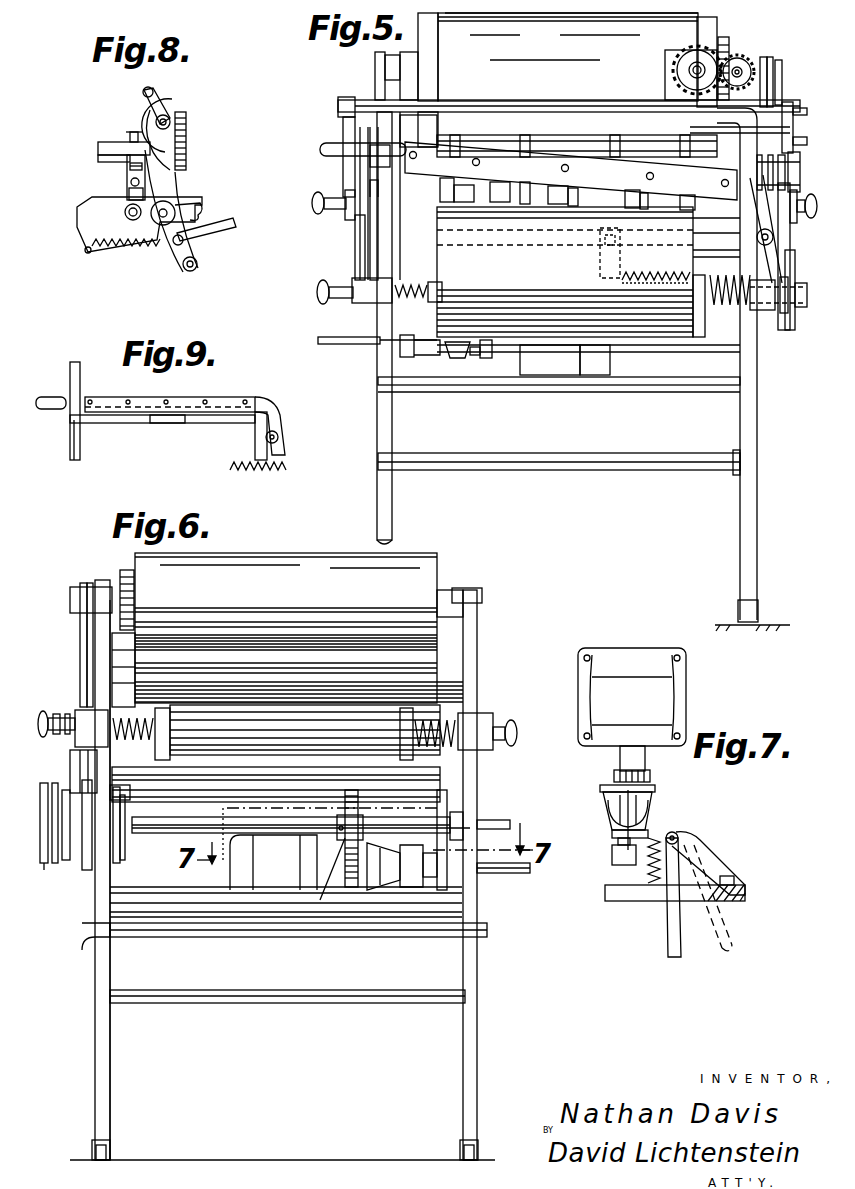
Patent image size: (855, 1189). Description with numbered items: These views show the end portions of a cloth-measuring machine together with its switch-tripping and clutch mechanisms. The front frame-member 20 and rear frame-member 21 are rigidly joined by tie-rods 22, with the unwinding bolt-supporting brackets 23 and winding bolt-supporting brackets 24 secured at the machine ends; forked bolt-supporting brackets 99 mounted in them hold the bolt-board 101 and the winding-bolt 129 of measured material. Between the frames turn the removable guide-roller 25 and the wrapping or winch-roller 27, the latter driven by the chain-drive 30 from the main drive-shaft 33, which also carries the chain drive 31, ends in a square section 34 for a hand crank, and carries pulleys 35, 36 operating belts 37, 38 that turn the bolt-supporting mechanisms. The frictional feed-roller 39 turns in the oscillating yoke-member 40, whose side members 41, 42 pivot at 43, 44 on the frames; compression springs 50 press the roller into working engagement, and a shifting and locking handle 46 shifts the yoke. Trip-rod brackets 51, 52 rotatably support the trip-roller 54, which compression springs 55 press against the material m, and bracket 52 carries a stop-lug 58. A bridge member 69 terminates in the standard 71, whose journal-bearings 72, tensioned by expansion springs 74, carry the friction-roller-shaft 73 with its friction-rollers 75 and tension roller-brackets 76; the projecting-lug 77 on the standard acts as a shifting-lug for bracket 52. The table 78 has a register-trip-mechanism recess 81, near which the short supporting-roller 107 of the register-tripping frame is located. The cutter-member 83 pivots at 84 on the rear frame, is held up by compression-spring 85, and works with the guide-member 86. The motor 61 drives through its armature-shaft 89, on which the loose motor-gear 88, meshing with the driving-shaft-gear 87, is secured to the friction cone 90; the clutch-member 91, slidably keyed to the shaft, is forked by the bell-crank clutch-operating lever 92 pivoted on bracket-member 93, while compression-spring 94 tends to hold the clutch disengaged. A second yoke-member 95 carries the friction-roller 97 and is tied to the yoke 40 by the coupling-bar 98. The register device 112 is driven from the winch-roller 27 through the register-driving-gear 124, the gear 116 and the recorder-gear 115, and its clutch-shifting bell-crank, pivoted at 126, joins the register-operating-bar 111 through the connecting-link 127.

In FIG. 5, the material m is at (565, 13).
In FIG. 5, the front frame-member 20 is at (378, 435).
In FIG. 9, the front frame-member 20 is at (70, 446).
In FIG. 6, the front frame-member 20 is at (478, 646).
In FIG. 7, the front frame-member 20 is at (740, 903).
In FIG. 5, the rear frame-member 21 is at (758, 511).
In FIG. 8, the rear frame-member 21 is at (118, 225).
In FIG. 9, the rear frame-member 21 is at (255, 447).
In FIG. 6, the rear frame-member 21 is at (95, 1042).
In FIG. 5, the tie-rods 22 is at (660, 472).
In FIG. 6, the tie-rods 22 is at (318, 1003).
In FIG. 6, the unwinding bolt-supporting-brackets 23 is at (483, 728).
In FIG. 5, the winding bolt-supporting brackets 24 is at (750, 352).
In FIG. 5, the removable guide-roller 25 is at (516, 395).
In FIG. 6, the removable guide-roller 25 is at (175, 918).
In FIG. 5, the wrapping or winch-roller 27 is at (420, 33).
In FIG. 5, the chain-drive 30 is at (777, 95).
In FIG. 6, the chain-drive 30 is at (82, 652).
In FIG. 6, the chain drive 31 is at (122, 853).
In FIG. 6, the main drive-shaft 33 is at (176, 833).
In FIG. 6, the square section 34 is at (500, 822).
In FIG. 6, the pulley 35 is at (70, 850).
In FIG. 6, the pulley 36 is at (46, 850).
In FIG. 6, the belt 37 is at (56, 866).
In FIG. 6, the belt 38 is at (75, 765).
In FIG. 5, the main co-acting frictional feed-roller 39 is at (440, 128).
In FIG. 8, the main co-acting frictional feed-roller 39 is at (170, 102).
In FIG. 5, the yoke-member 40 is at (460, 146).
In FIG. 5, the side member 41 is at (340, 205).
In FIG. 5, the side member 42 is at (767, 182).
In FIG. 8, the side member 42 is at (162, 190).
In FIG. 5, the pivot 43 is at (352, 222).
In FIG. 8, the pivot 44 is at (203, 208).
In FIG. 5, the shifting and locking handle 46 is at (345, 282).
In FIG. 8, the compression springs 50 is at (135, 248).
In FIG. 5, the trip-rod bracket 51 is at (340, 116).
In FIG. 5, the trip-rod bracket 52 is at (793, 127).
In FIG. 8, the trip-rod bracket 52 is at (145, 107).
In FIG. 5, the trip-roller 54 is at (490, 104).
In FIG. 8, the trip-roller 54 is at (152, 88).
In FIG. 8, the compression springs 55 is at (188, 140).
In FIG. 8, the stop-lug 58 is at (170, 172).
In FIG. 5, the motor 61 is at (583, 355).
In FIG. 6, the motor 61 is at (275, 872).
In FIG. 7, the motor 61 is at (655, 695).
In FIG. 8, the bridge member 69 is at (98, 146).
In FIG. 8, the standard 71 is at (125, 172).
In FIG. 8, the journal-bearings 72 is at (132, 190).
In FIG. 8, the friction-roller-shaft 73 is at (130, 185).
In FIG. 8, the expansion springs 74 is at (127, 168).
In FIG. 5, the friction-rollers 75 is at (500, 205).
In FIG. 5, the tension roller-brackets 76 is at (472, 205).
In FIG. 8, the projecting-lug 77 is at (147, 125).
In FIG. 9, the table 78 is at (120, 424).
In FIG. 5, the register-trip-mechanism recess 81 is at (770, 240).
In FIG. 9, the register-trip-mechanism recess 81 is at (170, 424).
In FIG. 5, the cutter-member 83 is at (330, 153).
In FIG. 9, the cutter-member 83 is at (225, 400).
In FIG. 9, the pivot 84 is at (279, 440).
In FIG. 5, the compression-spring 85 is at (668, 272).
In FIG. 9, the compression-spring 85 is at (253, 473).
In FIG. 9, the guide-member 86 is at (70, 375).
In FIG. 6, the driving-shaft-gear 87 is at (340, 842).
In FIG. 5, the loose motor-gear 88 is at (488, 360).
In FIG. 6, the loose motor-gear 88 is at (352, 890).
In FIG. 7, the loose motor-gear 88 is at (652, 778).
In FIG. 7, the armature-shaft 89 is at (612, 857).
In FIG. 5, the friction cone 90 is at (460, 360).
In FIG. 6, the friction cone 90 is at (385, 892).
In FIG. 7, the friction cone 90 is at (615, 810).
In FIG. 5, the friction clutch-member 91 is at (450, 350).
In FIG. 6, the friction clutch-member 91 is at (422, 890).
In FIG. 7, the friction clutch-member 91 is at (650, 827).
In FIG. 5, the clutch-operating lever 92 is at (335, 344).
In FIG. 6, the clutch-operating lever 92 is at (513, 875).
In FIG. 7, the clutch-operating lever 92 is at (667, 930).
In FIG. 7, the bracket-member 93 is at (700, 858).
In FIG. 7, the compression-spring 94 is at (648, 872).
In FIG. 6, the yoke-member 95 is at (175, 803).
In FIG. 6, the friction-roller 97 is at (277, 730).
In FIG. 8, the coupling-bar 98 is at (222, 230).
In FIG. 6, the coupling-bar 98 is at (70, 762).
In FIG. 5, the bolt-supporting brackets 99 is at (418, 308).
In FIG. 6, the bolt-supporting brackets 99 is at (168, 724).
In FIG. 5, the bolt-board 101 is at (712, 312).
In FIG. 5, the short or front supporting-roller 107 is at (575, 205).
In FIG. 5, the register-operating-bar 111 is at (590, 147).
In FIG. 5, the register device 112 is at (668, 85).
In FIG. 5, the recorder-gear 115 is at (672, 62).
In FIG. 5, the gear 116 is at (745, 55).
In FIG. 5, the register-driving-gear 124 is at (732, 45).
In FIG. 6, the register-driving-gear 124 is at (126, 572).
In FIG. 6, the pivot 126 is at (150, 795).
In FIG. 6, the connecting-link 127 is at (420, 585).
In FIG. 5, the winding-bolt 129 is at (665, 345).